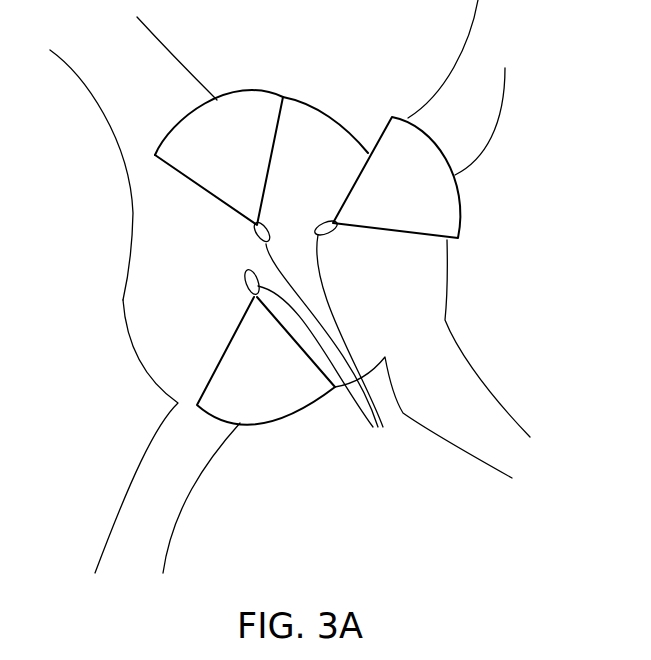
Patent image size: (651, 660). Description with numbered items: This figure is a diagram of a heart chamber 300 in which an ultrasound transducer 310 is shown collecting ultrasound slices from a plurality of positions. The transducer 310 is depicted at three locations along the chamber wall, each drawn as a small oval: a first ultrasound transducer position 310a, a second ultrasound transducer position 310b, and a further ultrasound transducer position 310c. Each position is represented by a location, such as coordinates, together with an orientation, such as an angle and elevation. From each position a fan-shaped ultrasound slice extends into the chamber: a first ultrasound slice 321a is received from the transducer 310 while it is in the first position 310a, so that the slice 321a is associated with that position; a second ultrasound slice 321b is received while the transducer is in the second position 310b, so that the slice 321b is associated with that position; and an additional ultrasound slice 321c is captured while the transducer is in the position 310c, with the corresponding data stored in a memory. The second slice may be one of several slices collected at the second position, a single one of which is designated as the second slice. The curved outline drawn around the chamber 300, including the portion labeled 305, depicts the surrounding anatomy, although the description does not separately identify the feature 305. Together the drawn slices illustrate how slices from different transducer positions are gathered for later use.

The heart chamber 300 is at (150, 227).
The vessel wall / annulus 305 is at (140, 330).
The ultrasound transducer 310 is at (328, 346).
The first ultrasound transducer position 310a is at (337, 226).
The second ultrasound transducer position 310b is at (263, 223).
The ultrasound transducer position 310c is at (248, 283).
The first ultrasound slice 321a is at (448, 212).
The second ultrasound slice 321b is at (255, 112).
The ultrasound slice 321c is at (279, 398).